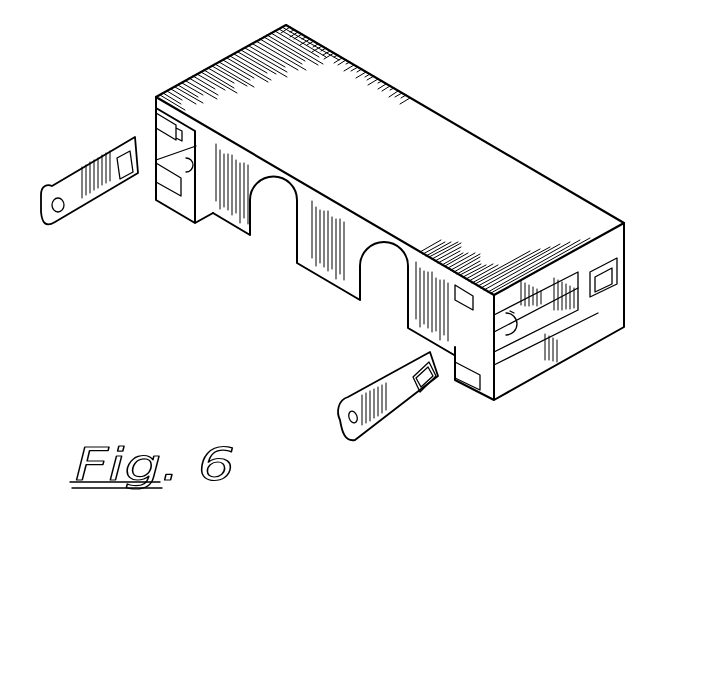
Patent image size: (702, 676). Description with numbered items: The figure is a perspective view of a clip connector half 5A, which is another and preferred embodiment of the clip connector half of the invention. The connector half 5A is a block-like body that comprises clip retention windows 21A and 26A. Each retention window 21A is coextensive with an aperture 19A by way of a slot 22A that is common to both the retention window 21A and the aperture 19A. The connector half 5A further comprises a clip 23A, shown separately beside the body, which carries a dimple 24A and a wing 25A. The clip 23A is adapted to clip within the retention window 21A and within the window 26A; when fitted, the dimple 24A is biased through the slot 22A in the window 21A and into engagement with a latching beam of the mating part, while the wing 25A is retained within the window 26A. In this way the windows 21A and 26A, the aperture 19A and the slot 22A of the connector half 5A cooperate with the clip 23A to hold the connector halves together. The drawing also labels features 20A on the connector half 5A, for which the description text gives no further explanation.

The clip connector half 5A is at (453, 143).
The aperture 19A is at (186, 166).
The terminal receiving opening 20A is at (183, 193).
The clip retention window 21A is at (545, 315).
The slot 22A is at (167, 147).
The clip 23A is at (390, 388).
The dimple 24A is at (58, 214).
The wing 25A is at (127, 170).
The clip retention window 26A is at (603, 280).